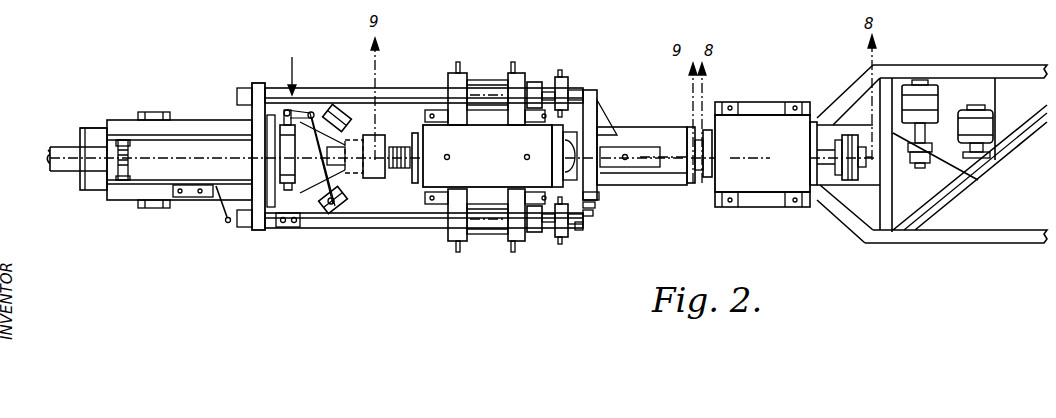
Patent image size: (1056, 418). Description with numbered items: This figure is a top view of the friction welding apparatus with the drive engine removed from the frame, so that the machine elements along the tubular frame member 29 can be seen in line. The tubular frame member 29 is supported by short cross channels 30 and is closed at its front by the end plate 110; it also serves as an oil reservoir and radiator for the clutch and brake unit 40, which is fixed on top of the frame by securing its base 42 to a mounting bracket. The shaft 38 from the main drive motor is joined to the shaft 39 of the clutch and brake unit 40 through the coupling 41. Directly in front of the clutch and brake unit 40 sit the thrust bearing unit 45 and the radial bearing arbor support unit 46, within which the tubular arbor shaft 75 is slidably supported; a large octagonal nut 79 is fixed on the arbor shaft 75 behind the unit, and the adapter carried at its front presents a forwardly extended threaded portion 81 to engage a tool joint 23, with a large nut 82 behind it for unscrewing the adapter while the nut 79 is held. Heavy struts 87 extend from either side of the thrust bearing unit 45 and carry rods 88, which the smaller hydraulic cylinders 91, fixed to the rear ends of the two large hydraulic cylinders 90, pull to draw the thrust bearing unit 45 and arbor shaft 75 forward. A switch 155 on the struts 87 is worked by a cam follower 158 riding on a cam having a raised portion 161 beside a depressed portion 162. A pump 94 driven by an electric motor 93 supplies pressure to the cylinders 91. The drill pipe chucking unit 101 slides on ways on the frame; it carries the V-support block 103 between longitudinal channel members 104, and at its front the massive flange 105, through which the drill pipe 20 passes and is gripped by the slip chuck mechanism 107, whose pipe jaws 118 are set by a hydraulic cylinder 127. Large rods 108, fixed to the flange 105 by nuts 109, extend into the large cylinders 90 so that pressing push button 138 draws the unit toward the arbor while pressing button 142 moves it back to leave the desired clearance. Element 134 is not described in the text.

The drill pipe 20 is at (58, 145).
The tubular frame member 29 is at (85, 128).
The end plate 110 is at (78, 184).
The drill pipe chucking unit 101 is at (115, 122).
The longitudinal channel members 104 is at (152, 137).
The cross channels 30 is at (153, 207).
The V-support block 103 is at (127, 164).
The flange 105 is at (263, 155).
The clamp block 134 is at (190, 198).
The nuts 109 is at (242, 88).
The large rods 108 is at (423, 90).
The slip chuck mechanism 107 is at (286, 122).
The hydraulic cylinder 127 is at (267, 135).
The pipe jaws 118 is at (355, 100).
The tool joint 23 is at (377, 172).
The threaded portion 81 is at (397, 172).
The nut 82 is at (420, 176).
The radial bearing arbor support unit 46 is at (509, 144).
The octagonal nut 79 is at (562, 175).
The tubular arbor shaft 75 is at (565, 153).
The struts 87 is at (597, 113).
The thrust bearing unit 45 is at (655, 132).
The large hydraulic cylinders 90 is at (488, 88).
The smaller hydraulic cylinders 91 is at (547, 90).
The rods 88 is at (580, 90).
The depressed portion 162 is at (580, 230).
The raised portion 161 is at (591, 214).
The cam follower 158 is at (597, 206).
The switch 155 is at (602, 196).
The clutch and brake unit 40 is at (763, 123).
The base 42 is at (767, 206).
The shaft 39 is at (822, 190).
The shaft 38 is at (870, 160).
The coupling 41 is at (847, 125).
The pump 94 is at (933, 107).
The electric motor 93 is at (987, 125).
The push button 138 is at (283, 227).
The button 142 is at (295, 227).